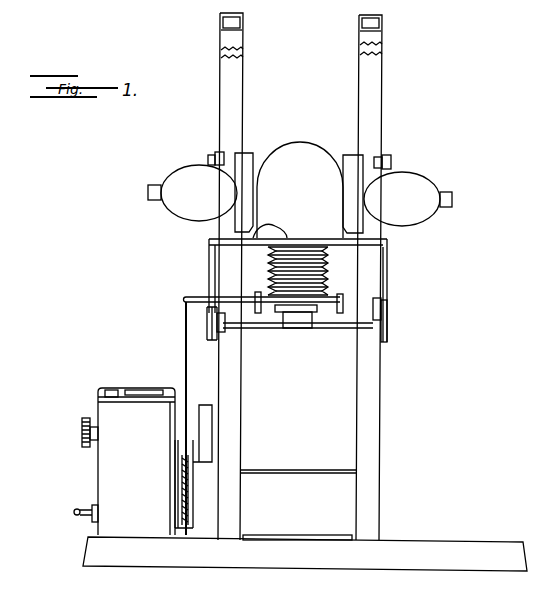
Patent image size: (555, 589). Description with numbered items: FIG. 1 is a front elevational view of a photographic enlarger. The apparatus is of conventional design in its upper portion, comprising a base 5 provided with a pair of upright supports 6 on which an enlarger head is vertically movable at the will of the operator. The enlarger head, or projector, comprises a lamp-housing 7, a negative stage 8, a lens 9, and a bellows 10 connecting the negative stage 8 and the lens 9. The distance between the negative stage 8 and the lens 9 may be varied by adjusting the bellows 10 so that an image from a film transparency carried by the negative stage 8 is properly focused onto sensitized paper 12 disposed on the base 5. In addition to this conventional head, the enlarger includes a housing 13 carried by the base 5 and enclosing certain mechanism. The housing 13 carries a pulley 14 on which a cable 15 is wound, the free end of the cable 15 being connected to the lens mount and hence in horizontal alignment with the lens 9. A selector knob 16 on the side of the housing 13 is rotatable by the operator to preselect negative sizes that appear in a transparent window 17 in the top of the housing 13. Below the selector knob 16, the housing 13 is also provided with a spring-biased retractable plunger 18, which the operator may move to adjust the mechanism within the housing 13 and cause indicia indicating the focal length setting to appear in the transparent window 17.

The base 5 is at (465, 543).
The upright supports 6 is at (227, 50).
The lamp-housing 7 is at (310, 154).
The negative stage 8 is at (258, 226).
The lens 9 is at (310, 330).
The bellows 10 is at (338, 268).
The sensitized paper 12 is at (325, 537).
The housing 13 is at (98, 472).
The pulley 14 is at (193, 513).
The cable 15 is at (186, 345).
The selector knob 16 is at (82, 428).
The transparent window 17 is at (147, 390).
The spring-biased retractable plunger 18 is at (74, 512).